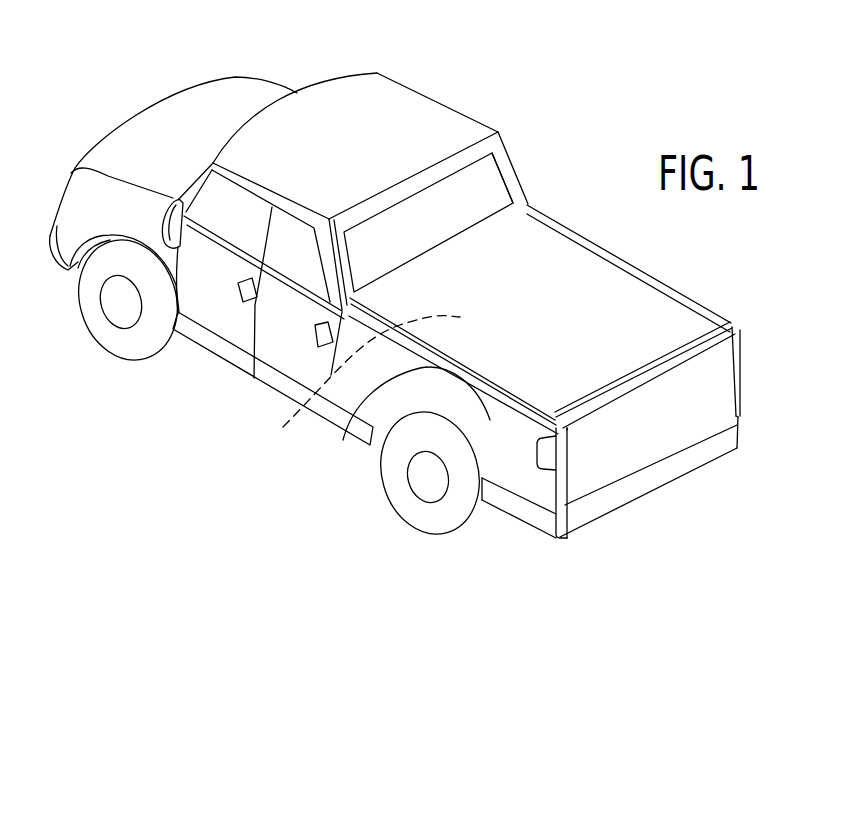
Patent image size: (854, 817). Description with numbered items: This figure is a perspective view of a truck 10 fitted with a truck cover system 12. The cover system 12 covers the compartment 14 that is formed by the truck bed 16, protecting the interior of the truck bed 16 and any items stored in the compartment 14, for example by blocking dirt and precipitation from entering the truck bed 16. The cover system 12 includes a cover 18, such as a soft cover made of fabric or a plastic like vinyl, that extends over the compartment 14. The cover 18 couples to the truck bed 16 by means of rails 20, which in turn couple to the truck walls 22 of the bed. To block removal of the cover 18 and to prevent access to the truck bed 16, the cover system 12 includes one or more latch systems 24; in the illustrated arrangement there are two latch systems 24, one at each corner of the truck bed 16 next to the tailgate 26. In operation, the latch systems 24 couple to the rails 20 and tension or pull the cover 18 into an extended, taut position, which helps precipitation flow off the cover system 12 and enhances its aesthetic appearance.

The truck 10 is at (84, 92).
The truck cover system 12 is at (757, 443).
The compartment 14 is at (358, 386).
The truck bed 16 is at (581, 137).
The cover 18 is at (590, 260).
The rails 20 is at (650, 282).
The truck walls 22 is at (513, 481).
The latch systems 24 is at (758, 340).
The tailgate 26 is at (651, 437).